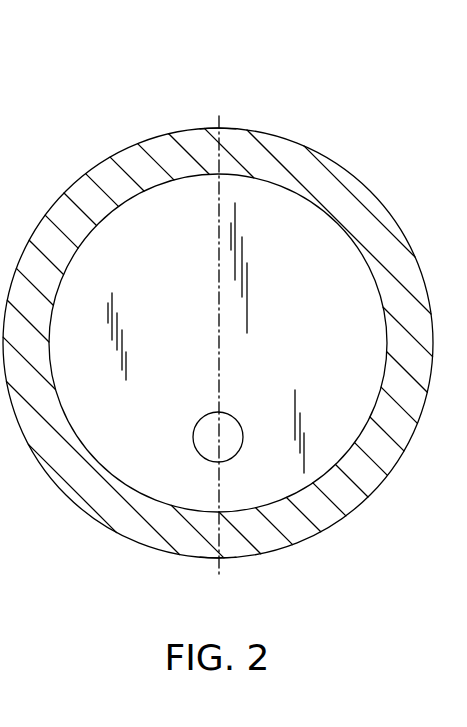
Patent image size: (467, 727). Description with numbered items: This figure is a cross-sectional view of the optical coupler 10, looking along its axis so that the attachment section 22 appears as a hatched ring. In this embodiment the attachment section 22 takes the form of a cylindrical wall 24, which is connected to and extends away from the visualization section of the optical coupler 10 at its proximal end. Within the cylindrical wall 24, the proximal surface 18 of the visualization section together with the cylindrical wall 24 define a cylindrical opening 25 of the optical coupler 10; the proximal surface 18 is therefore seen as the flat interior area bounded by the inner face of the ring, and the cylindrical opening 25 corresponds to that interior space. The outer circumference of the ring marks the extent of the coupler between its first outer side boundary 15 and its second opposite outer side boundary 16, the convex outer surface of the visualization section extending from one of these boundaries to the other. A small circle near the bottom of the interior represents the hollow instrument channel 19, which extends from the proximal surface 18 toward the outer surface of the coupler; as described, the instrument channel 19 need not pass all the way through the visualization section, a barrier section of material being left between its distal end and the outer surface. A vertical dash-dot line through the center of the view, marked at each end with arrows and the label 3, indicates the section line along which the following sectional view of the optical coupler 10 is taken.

The optical coupler 10 is at (350, 98).
The first outer side boundary 15 is at (237, 130).
The second opposite outer side boundary 16 is at (238, 560).
The proximal surface 18 is at (300, 290).
The hollow instrument channel 19 is at (208, 433).
The attachment section 22 is at (398, 228).
The cylindrical wall 24 is at (360, 197).
The cylindrical opening 25 is at (143, 217).
The section line 3- 3 is at (220, 116).